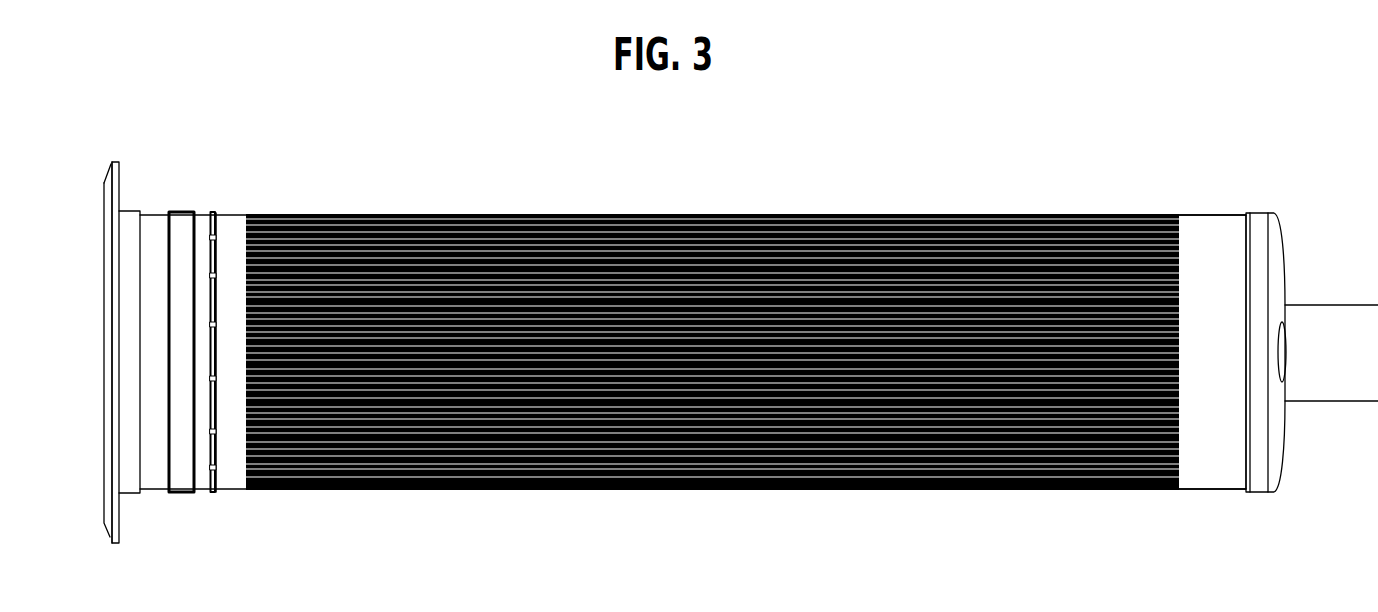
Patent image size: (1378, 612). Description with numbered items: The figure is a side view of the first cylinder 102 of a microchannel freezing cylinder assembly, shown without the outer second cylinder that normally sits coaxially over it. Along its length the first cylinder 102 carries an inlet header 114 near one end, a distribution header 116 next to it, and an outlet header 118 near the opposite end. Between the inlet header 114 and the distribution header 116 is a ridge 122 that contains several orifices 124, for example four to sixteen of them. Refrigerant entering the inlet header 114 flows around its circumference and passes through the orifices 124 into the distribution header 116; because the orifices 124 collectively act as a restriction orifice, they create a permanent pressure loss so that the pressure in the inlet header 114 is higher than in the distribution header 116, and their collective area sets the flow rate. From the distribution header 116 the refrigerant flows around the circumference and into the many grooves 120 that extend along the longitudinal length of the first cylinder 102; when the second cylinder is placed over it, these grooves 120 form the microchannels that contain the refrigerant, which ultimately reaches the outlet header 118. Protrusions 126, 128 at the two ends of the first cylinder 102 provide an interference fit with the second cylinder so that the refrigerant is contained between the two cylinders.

The first cylinder 102 is at (156, 136).
The inlet header 114 is at (200, 213).
The distribution header 116 is at (230, 213).
The outlet header 118 is at (1215, 215).
The grooves 120 is at (625, 215).
The ridge 122 is at (213, 475).
The orifices 124 is at (213, 326).
The protrusion 126 is at (183, 486).
The protrusion 128 is at (1255, 492).